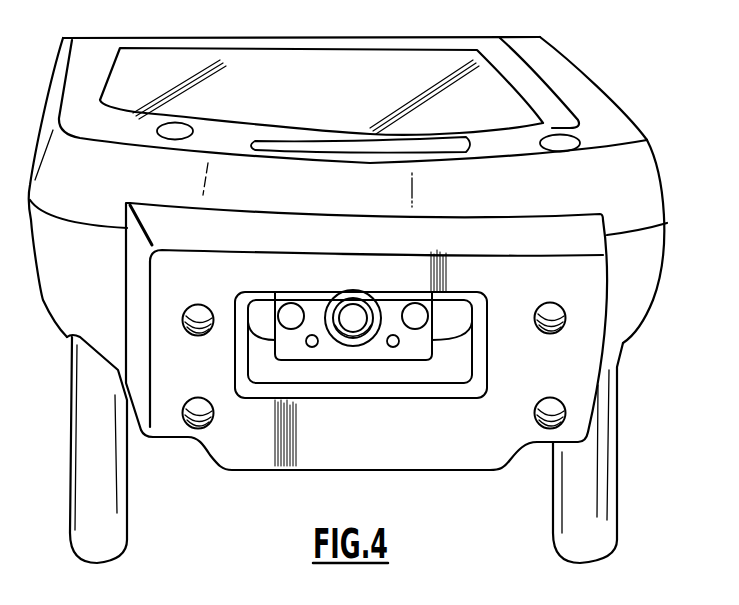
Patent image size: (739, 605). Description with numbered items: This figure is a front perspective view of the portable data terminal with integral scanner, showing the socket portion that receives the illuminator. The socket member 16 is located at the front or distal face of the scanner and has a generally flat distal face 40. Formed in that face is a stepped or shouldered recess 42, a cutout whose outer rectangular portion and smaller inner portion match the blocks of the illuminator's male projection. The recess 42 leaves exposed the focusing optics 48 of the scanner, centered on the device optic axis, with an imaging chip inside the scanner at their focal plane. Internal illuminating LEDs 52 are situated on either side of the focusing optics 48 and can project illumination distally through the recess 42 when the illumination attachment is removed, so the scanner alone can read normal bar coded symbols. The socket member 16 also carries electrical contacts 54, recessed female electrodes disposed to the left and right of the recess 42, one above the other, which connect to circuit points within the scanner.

The socket member 16 is at (583, 343).
The distal face 40 is at (268, 437).
The recess 42 is at (397, 403).
The focusing optics 48 is at (351, 306).
The internal illuminating LEDs 52 is at (291, 303).
The electrical contacts 54 is at (203, 335).